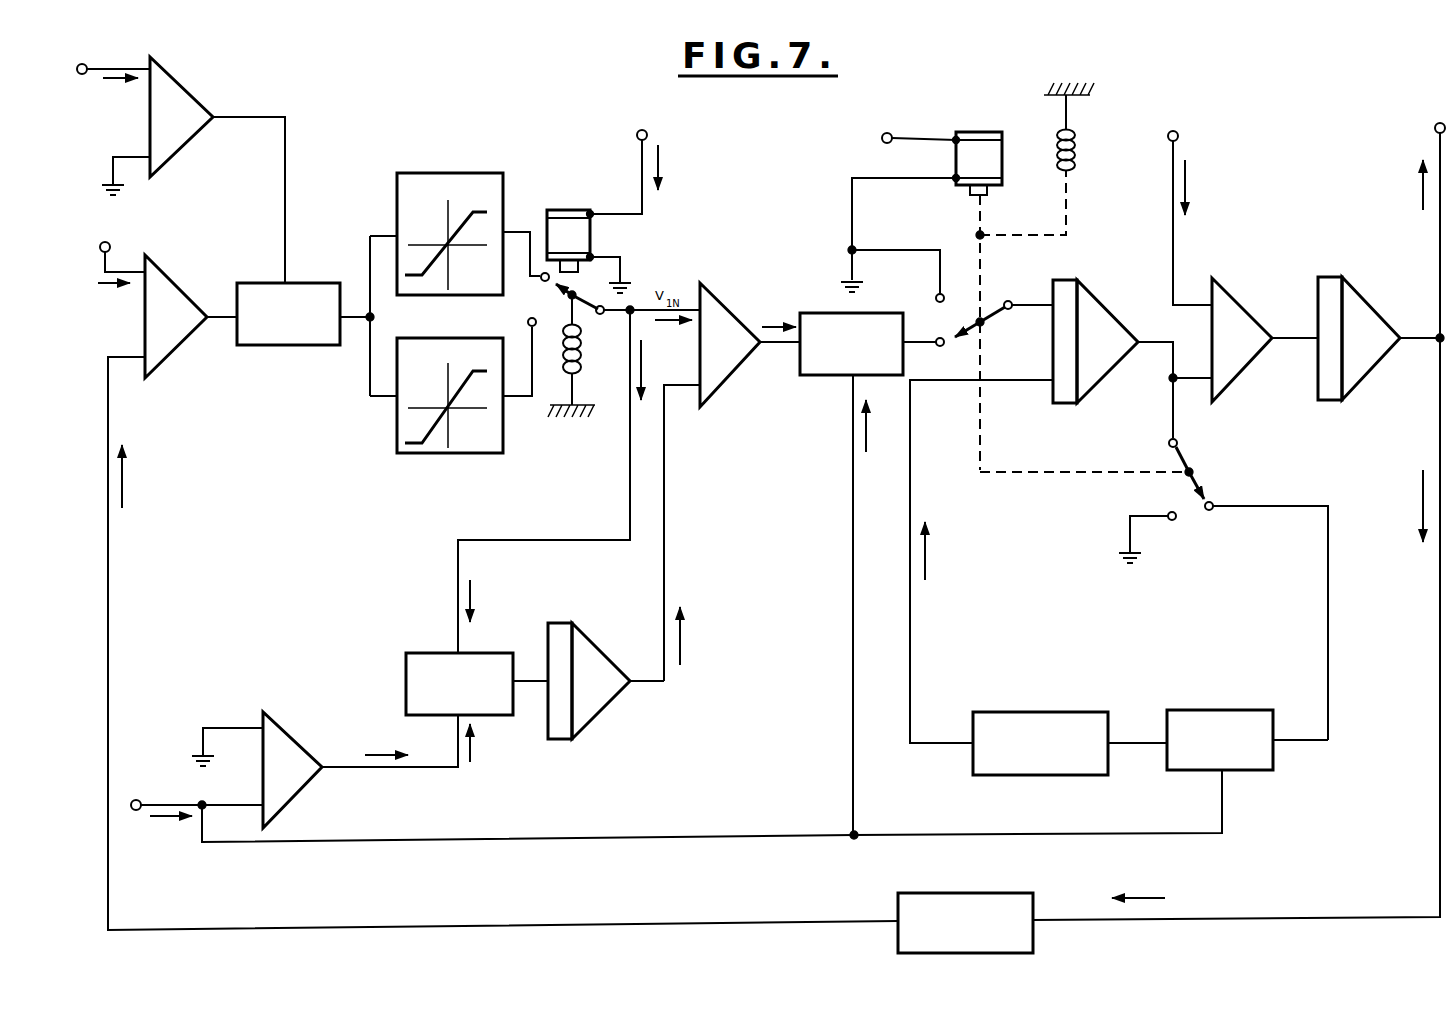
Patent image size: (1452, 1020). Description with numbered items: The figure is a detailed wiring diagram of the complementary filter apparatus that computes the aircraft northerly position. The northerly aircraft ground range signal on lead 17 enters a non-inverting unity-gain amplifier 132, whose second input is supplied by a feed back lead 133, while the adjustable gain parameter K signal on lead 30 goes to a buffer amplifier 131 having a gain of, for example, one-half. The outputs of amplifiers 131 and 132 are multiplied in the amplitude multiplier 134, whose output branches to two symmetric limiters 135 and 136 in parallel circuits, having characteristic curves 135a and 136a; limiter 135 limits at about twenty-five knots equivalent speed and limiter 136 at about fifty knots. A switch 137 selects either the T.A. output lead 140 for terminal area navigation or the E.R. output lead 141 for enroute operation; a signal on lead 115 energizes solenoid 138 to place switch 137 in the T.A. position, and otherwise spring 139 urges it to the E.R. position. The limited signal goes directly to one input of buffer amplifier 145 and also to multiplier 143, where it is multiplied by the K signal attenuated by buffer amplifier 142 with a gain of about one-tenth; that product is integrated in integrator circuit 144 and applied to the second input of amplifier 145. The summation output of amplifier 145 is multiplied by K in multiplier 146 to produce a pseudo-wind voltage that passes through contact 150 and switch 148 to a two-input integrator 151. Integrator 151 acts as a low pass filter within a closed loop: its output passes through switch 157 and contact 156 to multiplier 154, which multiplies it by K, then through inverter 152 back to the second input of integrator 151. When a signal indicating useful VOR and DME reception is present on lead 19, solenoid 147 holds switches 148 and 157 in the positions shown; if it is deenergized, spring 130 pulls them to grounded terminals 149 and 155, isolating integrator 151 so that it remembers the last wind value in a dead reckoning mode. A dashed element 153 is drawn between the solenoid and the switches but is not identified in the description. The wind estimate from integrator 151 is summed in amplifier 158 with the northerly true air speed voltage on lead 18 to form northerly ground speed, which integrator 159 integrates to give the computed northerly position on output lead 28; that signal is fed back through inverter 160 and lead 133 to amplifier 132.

The lead 30 is at (86, 64).
The buffer amplifier 131 is at (187, 82).
The lead 17 is at (102, 241).
The non-inverting unity-gain amplifier 132 is at (175, 353).
The feed back lead 133 is at (505, 930).
The amplitude multiplier 134 is at (305, 283).
The symmetric limiter 135 is at (450, 225).
The limiter characteristic curve 135a is at (438, 263).
The symmetric limiter 136 is at (407, 419).
The limiter characteristic curve 136a is at (432, 443).
The T.A. output lead 140 is at (522, 232).
The E.R. output lead 141 is at (522, 396).
The switch 137 is at (578, 288).
The solenoid 138 is at (570, 210).
The spring 139 is at (582, 352).
The lead 115 is at (642, 130).
The non-inverting unit gain buffer amplifier 145 is at (732, 378).
The analog amplitude multiplier 146 is at (815, 313).
The contact 150 is at (944, 348).
The switch 148 is at (994, 316).
The relay actuating linkage (dashed) 153 is at (1085, 475).
The integrator 151 is at (1098, 298).
The grounded terminal 149 is at (935, 294).
The lead 19 is at (887, 133).
The solenoid 147 is at (980, 132).
The spring 130 is at (1078, 148).
The lead 18 is at (1173, 131).
The summing amplifier 158 is at (1230, 297).
The non-inverting integrator 159 is at (1365, 298).
The output lead 28 is at (1440, 123).
The switch 157 is at (1197, 480).
The contact 156 is at (1214, 511).
The grounded terminal 155 is at (1174, 521).
The inverter 152 is at (1040, 712).
The analog amplitude multiplier 154 is at (1225, 710).
The inverter 160 is at (896, 895).
The buffer amplifier 142 is at (300, 790).
The analog amplitude multiplier 143 is at (405, 695).
The non-inverting integrator circuit 144 is at (605, 705).